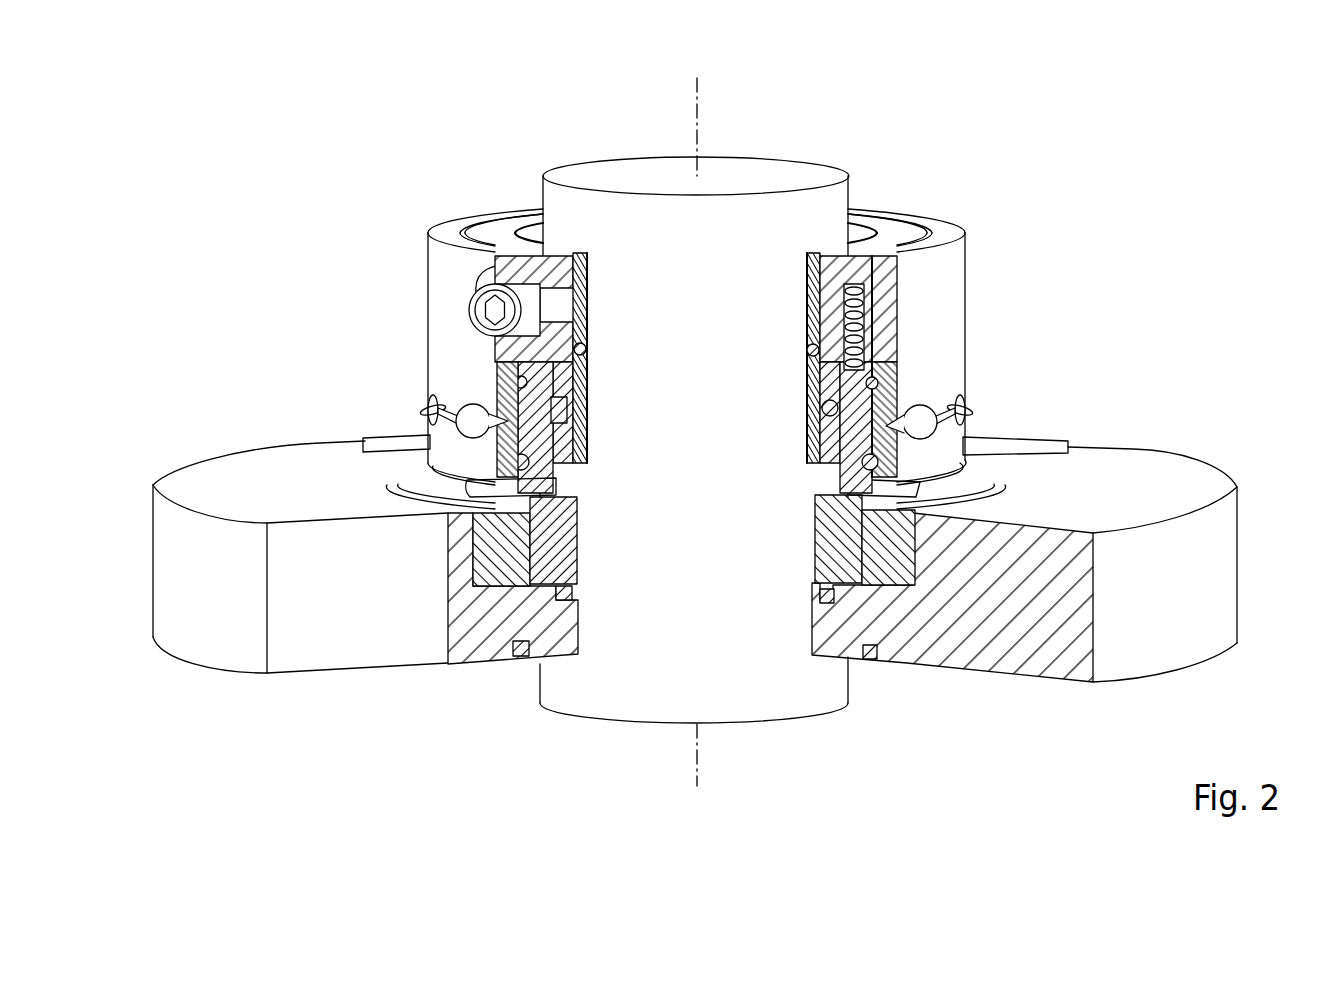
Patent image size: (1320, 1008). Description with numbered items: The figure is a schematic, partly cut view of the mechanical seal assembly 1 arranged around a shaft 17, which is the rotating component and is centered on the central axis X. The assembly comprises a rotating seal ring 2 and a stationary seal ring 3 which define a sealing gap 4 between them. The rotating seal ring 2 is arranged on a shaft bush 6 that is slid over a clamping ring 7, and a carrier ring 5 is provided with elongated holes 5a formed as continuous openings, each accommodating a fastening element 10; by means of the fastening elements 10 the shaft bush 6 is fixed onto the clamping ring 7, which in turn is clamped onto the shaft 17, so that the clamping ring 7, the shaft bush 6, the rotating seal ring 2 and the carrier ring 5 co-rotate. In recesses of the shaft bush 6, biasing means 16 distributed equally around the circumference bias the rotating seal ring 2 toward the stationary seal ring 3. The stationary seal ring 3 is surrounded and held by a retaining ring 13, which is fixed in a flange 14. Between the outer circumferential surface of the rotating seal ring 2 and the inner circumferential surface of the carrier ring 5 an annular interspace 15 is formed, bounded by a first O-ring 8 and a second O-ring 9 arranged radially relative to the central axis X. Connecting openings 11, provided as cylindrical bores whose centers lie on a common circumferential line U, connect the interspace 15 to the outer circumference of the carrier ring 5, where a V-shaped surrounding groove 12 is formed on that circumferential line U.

The mechanical seal assembly 1 is at (926, 104).
The rotating seal ring 2 is at (497, 372).
The stationary seal ring 3 is at (850, 567).
The sealing gap 4 is at (560, 484).
The carrier ring 5 is at (950, 229).
The elongated holes 5a is at (480, 271).
The shaft bush 6 is at (905, 230).
The clamping ring 7 is at (862, 233).
The first O-ring 8 is at (497, 357).
The second O-ring 9 is at (440, 438).
The fastening element 10 is at (477, 317).
The connecting openings 11 is at (433, 398).
The surrounding groove 12 is at (964, 440).
The retaining ring 13 is at (902, 568).
The flange 14 is at (568, 640).
The annular interspace 15 is at (878, 407).
The biasing means 16 is at (864, 318).
The shaft 17 is at (790, 172).
The common circumferential line U is at (436, 412).
The central axis X is at (697, 430).